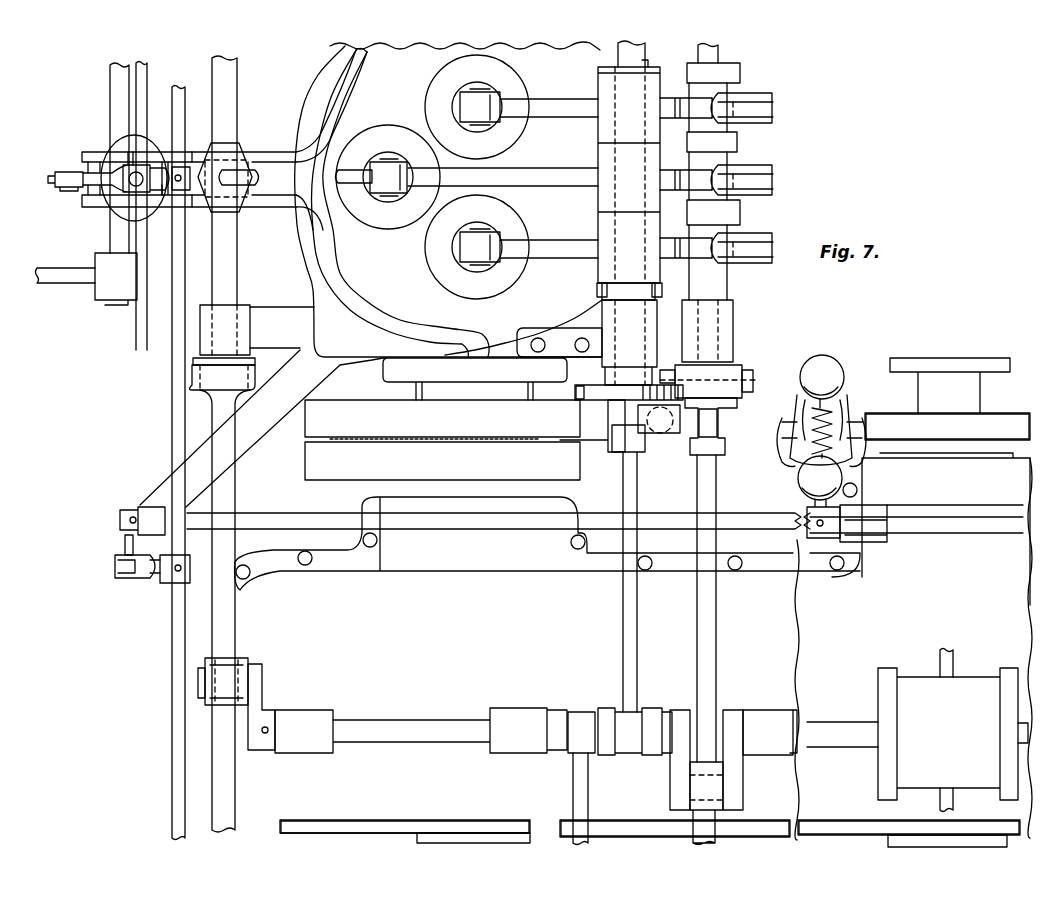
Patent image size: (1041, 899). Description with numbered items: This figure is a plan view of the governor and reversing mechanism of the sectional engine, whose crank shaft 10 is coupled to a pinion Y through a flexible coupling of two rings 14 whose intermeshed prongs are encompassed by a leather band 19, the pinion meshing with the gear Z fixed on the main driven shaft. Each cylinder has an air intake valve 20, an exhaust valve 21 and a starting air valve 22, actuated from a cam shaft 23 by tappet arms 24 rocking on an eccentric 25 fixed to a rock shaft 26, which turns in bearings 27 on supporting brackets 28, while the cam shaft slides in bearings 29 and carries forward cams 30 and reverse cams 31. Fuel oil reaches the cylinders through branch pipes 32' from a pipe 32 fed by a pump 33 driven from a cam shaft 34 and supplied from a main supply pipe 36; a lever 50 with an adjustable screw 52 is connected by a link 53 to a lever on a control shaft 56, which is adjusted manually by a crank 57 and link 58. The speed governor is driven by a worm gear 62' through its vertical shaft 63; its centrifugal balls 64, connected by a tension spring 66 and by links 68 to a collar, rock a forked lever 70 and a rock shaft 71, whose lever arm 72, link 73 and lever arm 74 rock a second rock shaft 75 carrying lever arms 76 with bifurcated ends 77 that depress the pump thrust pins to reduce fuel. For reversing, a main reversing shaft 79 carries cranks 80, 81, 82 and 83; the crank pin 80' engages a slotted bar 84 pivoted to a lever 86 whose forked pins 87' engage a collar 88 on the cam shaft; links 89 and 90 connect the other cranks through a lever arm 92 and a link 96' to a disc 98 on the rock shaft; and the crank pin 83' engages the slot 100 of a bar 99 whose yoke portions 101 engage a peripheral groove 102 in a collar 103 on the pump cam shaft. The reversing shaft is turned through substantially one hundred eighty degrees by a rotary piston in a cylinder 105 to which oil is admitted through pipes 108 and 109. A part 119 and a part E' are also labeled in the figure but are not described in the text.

The crank shaft 10 is at (428, 390).
The rings 14 is at (442, 440).
The band 19 is at (344, 442).
The air intake valve 20 is at (432, 258).
The exhaust valve 21 is at (440, 88).
The starting air valve 22 is at (375, 138).
The cam shaft 23 is at (729, 294).
The tappet arms 24 is at (565, 268).
The eccentric 25 is at (598, 220).
The rock shaft 26 is at (650, 52).
The bearings 27 is at (600, 314).
The supporting brackets 28 is at (562, 320).
The bearings 29 is at (733, 332).
The forward cams 30 is at (685, 118).
The reverse cams 31 is at (742, 74).
The pipe 32 is at (244, 184).
The branch pipes 32' is at (367, 202).
The pump 33 is at (120, 150).
The cam shaft 34 is at (238, 106).
The main supply pipe 36 is at (140, 322).
The lever 50 is at (78, 160).
The adjustable screw 52 is at (136, 192).
The link 53 is at (48, 179).
The control shaft 56 is at (110, 230).
The crank 57 is at (110, 288).
The link 58 is at (62, 284).
The worm gear 62' is at (944, 399).
The vertical shaft 63 is at (797, 400).
The centrifugal balls 64 is at (825, 352).
The tension spring 66 is at (834, 450).
The links 68 is at (855, 395).
The forked lever 70 is at (795, 460).
The rock shaft 71 is at (272, 520).
The lever arm 72 is at (123, 538).
The link 73 is at (113, 570).
The lever arm 74 is at (158, 580).
The rock shaft 75 is at (172, 648).
The lever arm 76 is at (162, 197).
The bifurcated end 77 is at (146, 162).
The main reversing shaft 79 is at (388, 720).
The cranks 80 is at (722, 760).
The crank pin 80' is at (675, 803).
The crank 81 is at (652, 708).
The crank 82 is at (560, 753).
The crank 83 is at (273, 707).
The crank pin 83' is at (177, 683).
The bar 84 is at (718, 652).
The lever 86 is at (726, 430).
The pins 87' is at (721, 366).
The collar 88 is at (740, 368).
The link 89 is at (625, 652).
The link 90 is at (585, 800).
The lever arm 92 is at (608, 415).
The link 96' is at (659, 436).
The disc 98 is at (576, 398).
The bar 99 is at (226, 628).
The slot 100 is at (230, 664).
The yoke portion 101 is at (193, 362).
The peripheral groove 102 is at (252, 346).
The collar 103 is at (198, 392).
The cylinder 105 is at (948, 734).
The pipe 108 is at (954, 800).
The pipe 109 is at (955, 662).
The tab 119 is at (350, 186).
The pinion Y is at (395, 825).
The gear Z is at (850, 828).
The base plate E' is at (937, 826).